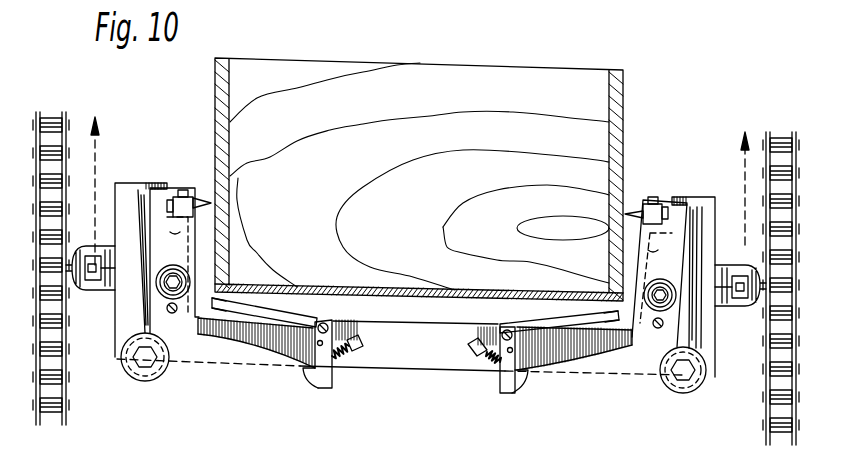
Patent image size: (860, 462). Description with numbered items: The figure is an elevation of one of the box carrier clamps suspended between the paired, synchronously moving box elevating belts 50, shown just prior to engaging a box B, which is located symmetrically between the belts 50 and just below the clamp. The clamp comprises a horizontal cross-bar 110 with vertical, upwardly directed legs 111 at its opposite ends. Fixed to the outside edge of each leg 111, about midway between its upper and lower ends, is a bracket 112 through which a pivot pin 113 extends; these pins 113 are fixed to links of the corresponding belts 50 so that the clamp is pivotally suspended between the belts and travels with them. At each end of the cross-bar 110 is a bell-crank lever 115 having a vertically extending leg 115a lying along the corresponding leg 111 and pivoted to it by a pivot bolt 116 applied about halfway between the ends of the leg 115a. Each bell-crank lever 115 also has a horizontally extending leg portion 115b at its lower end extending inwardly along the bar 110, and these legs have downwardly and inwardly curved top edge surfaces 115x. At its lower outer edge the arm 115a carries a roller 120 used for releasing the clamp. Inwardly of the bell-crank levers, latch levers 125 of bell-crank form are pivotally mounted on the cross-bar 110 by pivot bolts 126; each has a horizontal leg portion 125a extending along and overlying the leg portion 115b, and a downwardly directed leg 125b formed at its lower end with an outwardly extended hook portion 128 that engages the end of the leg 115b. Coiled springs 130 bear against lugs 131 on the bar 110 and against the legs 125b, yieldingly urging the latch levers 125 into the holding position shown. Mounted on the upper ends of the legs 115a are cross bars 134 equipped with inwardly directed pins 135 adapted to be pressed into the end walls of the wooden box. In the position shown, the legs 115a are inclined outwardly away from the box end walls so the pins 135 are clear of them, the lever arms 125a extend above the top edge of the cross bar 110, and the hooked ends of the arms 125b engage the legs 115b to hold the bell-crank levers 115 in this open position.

The box B is at (446, 179).
The belts 50 is at (52, 120).
The horizontal cross-bar 110 is at (418, 360).
The vertical leg 111 is at (120, 186).
The bracket 112 is at (108, 285).
The pivot pin 113 is at (102, 260).
The bell-crank lever 115 is at (185, 347).
The vertically extending leg 115a is at (173, 232).
The horizontally extending leg portion 115b is at (256, 345).
The curved top edge surface 115x is at (312, 312).
The pivot bolt 116 is at (189, 270).
The roller 120 is at (136, 382).
The latch lever 125 is at (322, 316).
The horizontal leg portion 125a is at (250, 312).
The downwardly directed leg 125b is at (332, 368).
The pivot bolt 126 is at (328, 325).
The hook portion 128 is at (320, 388).
The coiled spring 130 is at (360, 352).
The lug 131 is at (358, 333).
The cross bar 134 is at (182, 197).
The pin 135 is at (210, 205).